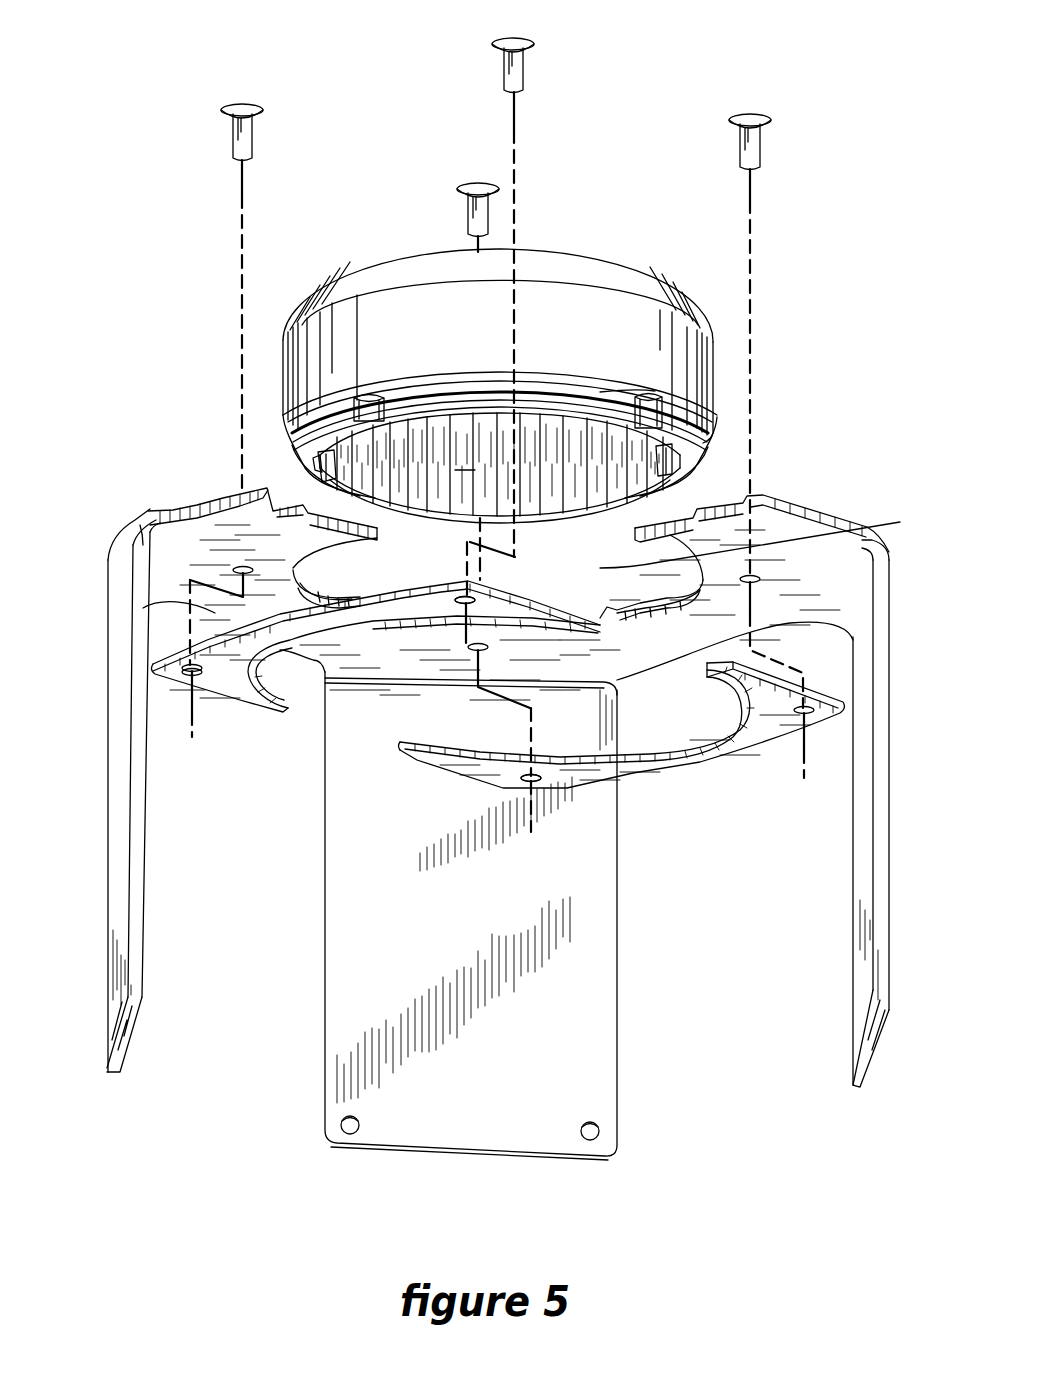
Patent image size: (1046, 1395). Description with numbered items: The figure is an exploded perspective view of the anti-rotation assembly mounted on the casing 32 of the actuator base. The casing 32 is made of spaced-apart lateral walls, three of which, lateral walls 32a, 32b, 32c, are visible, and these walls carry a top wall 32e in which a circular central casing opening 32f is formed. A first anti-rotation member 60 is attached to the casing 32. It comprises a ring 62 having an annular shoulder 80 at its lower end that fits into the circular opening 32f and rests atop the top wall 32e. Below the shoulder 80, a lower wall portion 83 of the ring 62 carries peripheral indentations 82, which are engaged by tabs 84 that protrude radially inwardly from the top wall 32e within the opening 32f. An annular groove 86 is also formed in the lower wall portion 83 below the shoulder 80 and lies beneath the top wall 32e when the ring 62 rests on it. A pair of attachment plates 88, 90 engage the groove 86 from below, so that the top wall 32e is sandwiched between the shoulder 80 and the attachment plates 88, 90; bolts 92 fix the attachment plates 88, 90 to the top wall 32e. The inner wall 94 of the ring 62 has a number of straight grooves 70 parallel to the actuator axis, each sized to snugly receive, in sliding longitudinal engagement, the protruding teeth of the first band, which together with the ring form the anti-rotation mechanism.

The casing 32 is at (500, 819).
The lateral wall 32a is at (118, 895).
The lateral wall 32b is at (607, 1103).
The lateral wall 32c is at (878, 860).
The top wall 32e is at (817, 545).
The circular central casing opening 32f is at (770, 531).
The first anti-rotation member 60 is at (561, 342).
The ring 62 is at (692, 368).
The straight grooves 70 is at (500, 502).
The annular shoulder 80 is at (509, 433).
The indentations 82 is at (662, 397).
The lower wall portion 83 is at (322, 458).
The tabs 84 is at (356, 597).
The annular groove 86 is at (655, 420).
The attachment plate 88 is at (673, 770).
The attachment plate 90 is at (213, 683).
The bolts 92 is at (247, 136).
The inner wall 94 is at (467, 474).